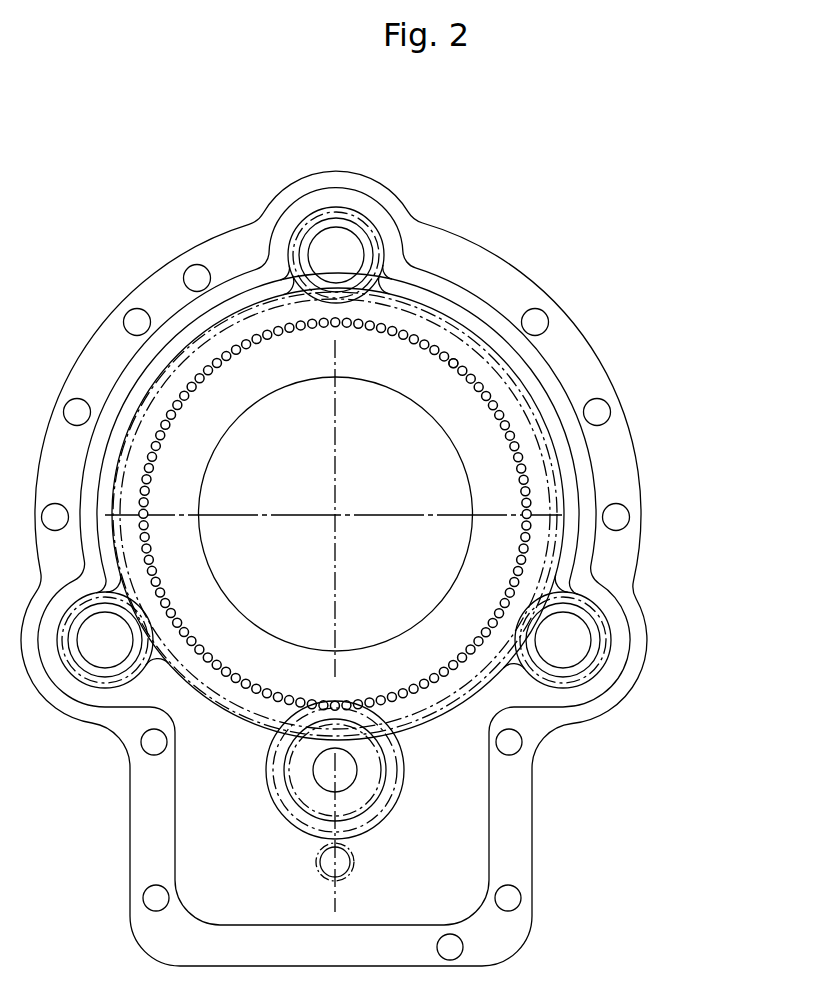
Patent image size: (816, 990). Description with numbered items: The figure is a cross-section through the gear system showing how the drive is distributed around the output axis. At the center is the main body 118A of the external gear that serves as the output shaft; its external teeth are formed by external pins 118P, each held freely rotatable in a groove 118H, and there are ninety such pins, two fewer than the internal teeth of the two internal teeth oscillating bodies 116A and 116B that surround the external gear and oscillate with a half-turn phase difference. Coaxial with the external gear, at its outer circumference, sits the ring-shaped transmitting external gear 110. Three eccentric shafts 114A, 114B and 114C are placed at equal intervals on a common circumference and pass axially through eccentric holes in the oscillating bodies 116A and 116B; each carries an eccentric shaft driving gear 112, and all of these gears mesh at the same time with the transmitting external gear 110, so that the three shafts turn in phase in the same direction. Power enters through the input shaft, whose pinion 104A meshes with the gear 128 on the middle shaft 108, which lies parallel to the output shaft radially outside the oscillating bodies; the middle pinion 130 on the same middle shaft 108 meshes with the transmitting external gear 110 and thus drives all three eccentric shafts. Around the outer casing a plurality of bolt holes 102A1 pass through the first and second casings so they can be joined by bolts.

The transmitting external gear 110 is at (548, 478).
The eccentric shaft driving gear 112 is at (402, 283).
The eccentric shaft 114A is at (341, 260).
The eccentric shaft 114B is at (113, 648).
The eccentric shaft 114C is at (568, 650).
The internal teeth oscillating body 116A is at (451, 313).
The internal teeth oscillating body 116B is at (335, 514).
The bolt hole 102A1 is at (592, 399).
The main body 118A is at (488, 492).
The groove 118H is at (451, 366).
The external pin 118P is at (527, 547).
The middle shaft 108 is at (342, 770).
The gear 128 is at (398, 808).
The middle pinion 130 is at (363, 808).
The pinion 104A is at (348, 866).